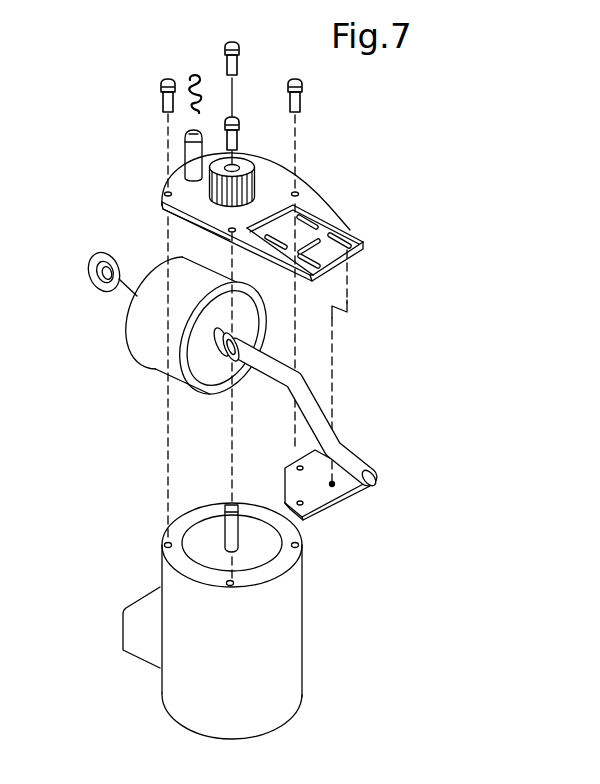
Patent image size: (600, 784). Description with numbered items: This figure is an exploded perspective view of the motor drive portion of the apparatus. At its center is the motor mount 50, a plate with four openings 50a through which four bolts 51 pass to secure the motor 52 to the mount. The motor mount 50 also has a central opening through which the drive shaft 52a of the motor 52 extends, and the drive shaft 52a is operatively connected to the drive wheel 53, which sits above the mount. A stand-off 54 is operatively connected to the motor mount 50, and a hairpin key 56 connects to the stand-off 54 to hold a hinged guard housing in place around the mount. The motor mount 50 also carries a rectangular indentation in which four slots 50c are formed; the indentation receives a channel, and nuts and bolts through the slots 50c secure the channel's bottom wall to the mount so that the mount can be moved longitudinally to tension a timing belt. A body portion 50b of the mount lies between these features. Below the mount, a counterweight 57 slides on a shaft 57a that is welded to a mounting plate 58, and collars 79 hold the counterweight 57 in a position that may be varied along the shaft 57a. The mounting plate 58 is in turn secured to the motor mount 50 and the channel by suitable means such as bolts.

The motor mount 50 is at (366, 245).
The openings 50a is at (312, 185).
The plate body portion 50b is at (195, 209).
The slots 50c is at (343, 220).
The bolts 51 is at (302, 96).
The motor 52 is at (305, 668).
The drive shaft 52a is at (222, 525).
The drive wheel 53 is at (260, 181).
The stand-off 54 is at (184, 156).
The hairpin key 56 is at (193, 78).
The counterweight 57 is at (150, 353).
The shaft 57a is at (265, 375).
The mounting plate 58 is at (337, 505).
The collars 79 is at (92, 291).